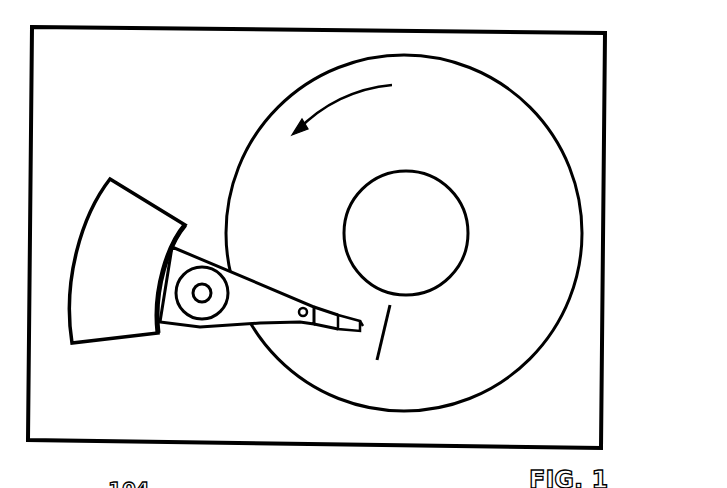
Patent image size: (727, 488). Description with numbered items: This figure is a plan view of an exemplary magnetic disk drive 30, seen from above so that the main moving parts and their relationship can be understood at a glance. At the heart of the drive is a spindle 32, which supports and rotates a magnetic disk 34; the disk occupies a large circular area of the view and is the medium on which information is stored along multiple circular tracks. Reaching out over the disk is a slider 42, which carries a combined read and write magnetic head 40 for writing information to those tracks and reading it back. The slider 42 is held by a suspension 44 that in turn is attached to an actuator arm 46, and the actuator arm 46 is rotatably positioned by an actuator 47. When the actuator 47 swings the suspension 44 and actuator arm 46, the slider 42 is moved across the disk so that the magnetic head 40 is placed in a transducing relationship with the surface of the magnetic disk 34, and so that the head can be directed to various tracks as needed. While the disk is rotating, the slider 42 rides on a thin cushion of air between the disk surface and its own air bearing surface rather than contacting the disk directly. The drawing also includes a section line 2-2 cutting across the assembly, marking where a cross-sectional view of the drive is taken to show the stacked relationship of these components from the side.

The magnetic disk drive 30 is at (624, 39).
The spindle 32 is at (429, 171).
The magnetic disk 34 is at (522, 238).
The magnetic head 40 is at (363, 325).
The slider 42 is at (363, 323).
The suspension 44 is at (325, 328).
The actuator arm 46 is at (240, 268).
The actuator 47 is at (142, 195).
The section line 2- 2 is at (400, 315).